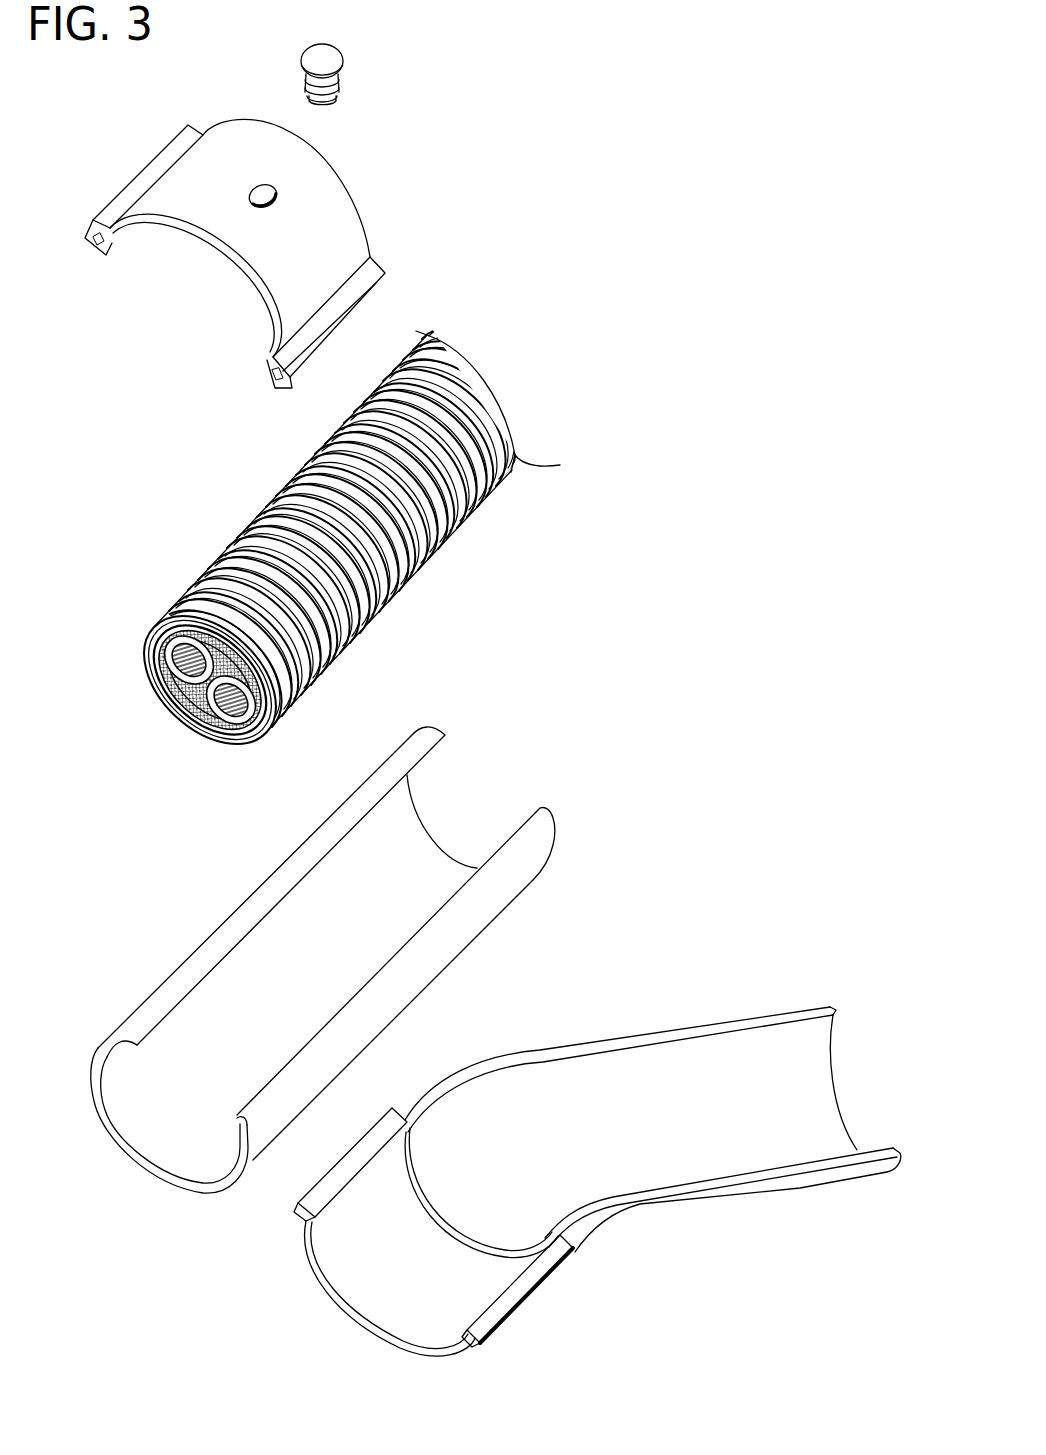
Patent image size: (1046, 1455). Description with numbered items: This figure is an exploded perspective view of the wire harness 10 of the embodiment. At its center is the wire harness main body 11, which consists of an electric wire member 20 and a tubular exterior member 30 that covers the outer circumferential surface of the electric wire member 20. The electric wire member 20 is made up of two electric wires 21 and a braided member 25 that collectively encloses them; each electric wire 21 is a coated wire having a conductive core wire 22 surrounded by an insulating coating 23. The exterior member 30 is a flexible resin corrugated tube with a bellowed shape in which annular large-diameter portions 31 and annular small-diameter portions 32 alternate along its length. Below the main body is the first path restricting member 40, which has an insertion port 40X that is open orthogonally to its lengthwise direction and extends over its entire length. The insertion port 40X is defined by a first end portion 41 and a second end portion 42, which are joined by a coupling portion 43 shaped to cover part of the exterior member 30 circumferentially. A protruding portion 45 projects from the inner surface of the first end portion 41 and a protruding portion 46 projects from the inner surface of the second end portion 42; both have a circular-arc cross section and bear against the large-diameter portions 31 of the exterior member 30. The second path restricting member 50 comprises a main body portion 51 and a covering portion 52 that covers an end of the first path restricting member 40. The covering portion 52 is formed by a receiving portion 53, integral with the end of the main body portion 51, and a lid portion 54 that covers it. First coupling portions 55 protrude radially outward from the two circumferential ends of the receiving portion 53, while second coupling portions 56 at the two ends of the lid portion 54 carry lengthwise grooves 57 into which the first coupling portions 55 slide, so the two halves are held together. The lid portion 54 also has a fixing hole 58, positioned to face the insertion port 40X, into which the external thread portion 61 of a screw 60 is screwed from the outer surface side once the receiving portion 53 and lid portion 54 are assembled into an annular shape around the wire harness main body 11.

The wire harness 10 is at (786, 194).
The wire harness main body 11 is at (268, 506).
The electric wire member 20 is at (290, 799).
The electric wire 21 is at (227, 714).
The core wire 22 is at (168, 682).
The insulating coating 23 is at (186, 697).
The braided member 25 is at (238, 718).
The exterior member 30 is at (185, 548).
The large-diameter portion 31 is at (202, 606).
The small-diameter portion 32 is at (172, 612).
The first path restricting member 40 is at (452, 961).
The insertion port 40X is at (341, 1001).
The first end portion 41 is at (171, 1004).
The second end portion 42 is at (279, 1063).
The coupling portion 43 is at (371, 1025).
The protruding portion 45 is at (134, 1046).
The protruding portion 46 is at (230, 1124).
The second path restricting member 50 is at (796, 1188).
The main body portion 51 is at (692, 1026).
The covering portion 52 is at (318, 749).
The receiving portion 53 is at (371, 1310).
The lid portion 54 is at (339, 208).
The first coupling portion 55 is at (317, 1195).
The second coupling portion 56 is at (96, 226).
The groove 57 is at (113, 252).
The fixing hole 58 is at (273, 188).
The screw 60 is at (328, 64).
The external thread portion 61 is at (305, 90).